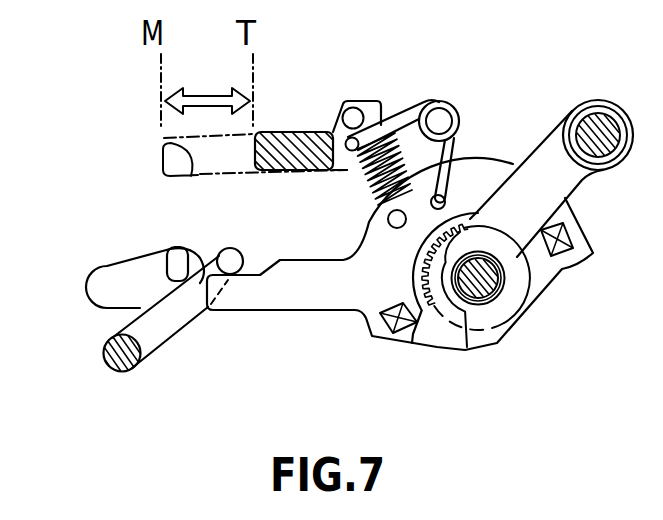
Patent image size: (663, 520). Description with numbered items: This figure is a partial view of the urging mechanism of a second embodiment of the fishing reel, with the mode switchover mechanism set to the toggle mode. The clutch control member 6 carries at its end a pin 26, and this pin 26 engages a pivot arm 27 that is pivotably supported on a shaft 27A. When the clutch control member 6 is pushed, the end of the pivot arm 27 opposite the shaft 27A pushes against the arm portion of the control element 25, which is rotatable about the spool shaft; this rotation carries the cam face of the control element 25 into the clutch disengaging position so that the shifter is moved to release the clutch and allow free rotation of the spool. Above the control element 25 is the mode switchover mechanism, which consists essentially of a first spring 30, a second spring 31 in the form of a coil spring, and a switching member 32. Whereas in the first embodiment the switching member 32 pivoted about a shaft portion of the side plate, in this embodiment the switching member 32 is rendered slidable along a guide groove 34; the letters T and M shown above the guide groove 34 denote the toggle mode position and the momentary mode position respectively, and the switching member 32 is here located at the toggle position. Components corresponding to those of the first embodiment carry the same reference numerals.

The clutch control member 6 is at (113, 262).
The control element 25 is at (363, 337).
The pin 26 is at (177, 246).
The pivot arm 27 is at (175, 332).
The shaft 27A is at (115, 375).
The first spring 30 is at (453, 103).
The second spring 31 is at (358, 166).
The switching member 32 is at (300, 132).
The guide groove 34 is at (164, 145).